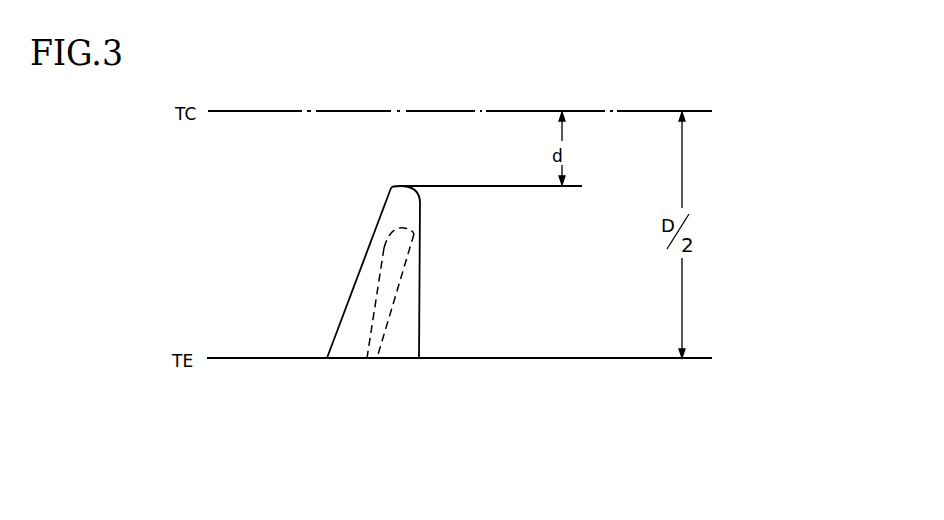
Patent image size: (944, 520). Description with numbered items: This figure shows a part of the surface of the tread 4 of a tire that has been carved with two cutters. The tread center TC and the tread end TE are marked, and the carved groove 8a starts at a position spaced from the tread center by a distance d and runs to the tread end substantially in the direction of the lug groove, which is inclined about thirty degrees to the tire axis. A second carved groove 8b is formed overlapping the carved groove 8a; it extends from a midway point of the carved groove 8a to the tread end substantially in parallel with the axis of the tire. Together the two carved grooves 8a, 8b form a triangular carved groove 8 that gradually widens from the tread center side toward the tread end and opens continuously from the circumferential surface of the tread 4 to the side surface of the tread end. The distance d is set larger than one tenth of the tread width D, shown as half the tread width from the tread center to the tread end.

The tread 4 is at (256, 258).
The carved groove 8 is at (437, 411).
The carved groove 8a is at (352, 338).
The carved groove 8b is at (402, 338).